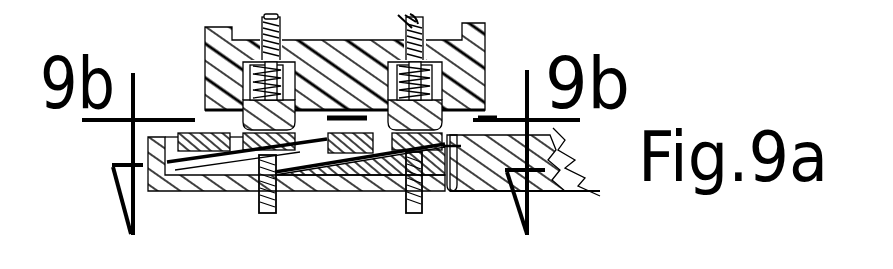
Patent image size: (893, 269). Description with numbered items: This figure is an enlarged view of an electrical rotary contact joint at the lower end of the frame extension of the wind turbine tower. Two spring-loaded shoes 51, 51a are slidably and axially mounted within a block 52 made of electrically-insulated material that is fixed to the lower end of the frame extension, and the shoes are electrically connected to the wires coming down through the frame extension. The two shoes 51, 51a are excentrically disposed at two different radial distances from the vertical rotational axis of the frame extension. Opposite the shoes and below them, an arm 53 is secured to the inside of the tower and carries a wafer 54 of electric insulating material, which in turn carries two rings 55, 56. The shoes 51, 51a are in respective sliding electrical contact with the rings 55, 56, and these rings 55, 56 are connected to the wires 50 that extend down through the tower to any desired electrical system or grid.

The wires 50 is at (400, 207).
The spring-loaded shoe 51 is at (315, 120).
The spring-loaded shoe 51a is at (420, 37).
The block 52 is at (480, 72).
The arm 53 is at (547, 193).
The wafer 54 is at (215, 182).
The ring 55 is at (453, 197).
The ring 56 is at (197, 192).